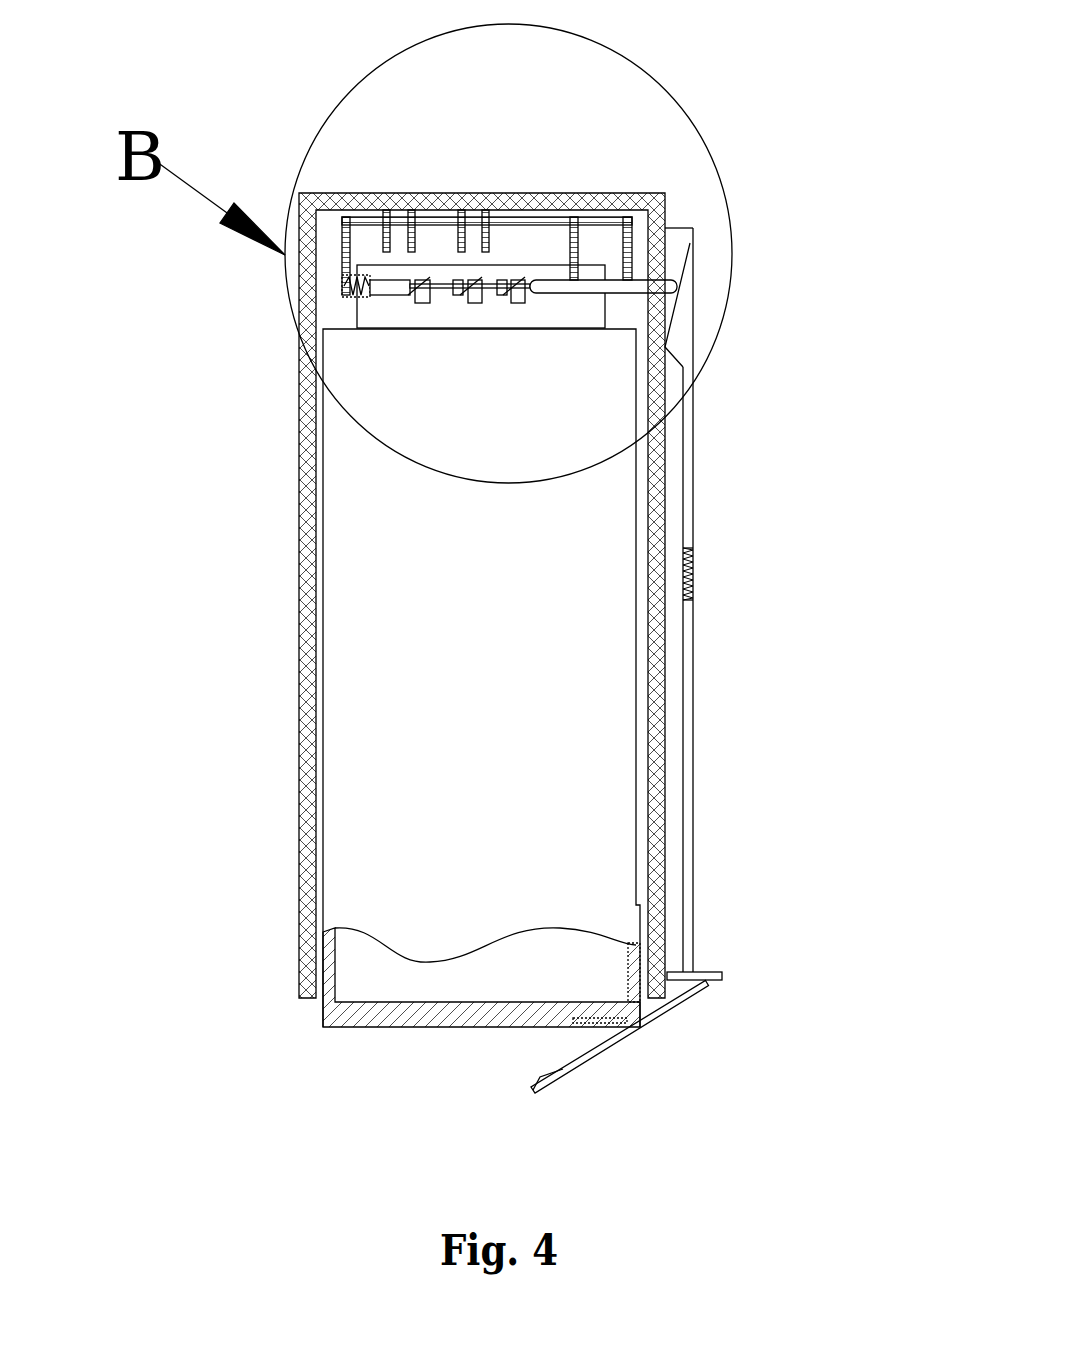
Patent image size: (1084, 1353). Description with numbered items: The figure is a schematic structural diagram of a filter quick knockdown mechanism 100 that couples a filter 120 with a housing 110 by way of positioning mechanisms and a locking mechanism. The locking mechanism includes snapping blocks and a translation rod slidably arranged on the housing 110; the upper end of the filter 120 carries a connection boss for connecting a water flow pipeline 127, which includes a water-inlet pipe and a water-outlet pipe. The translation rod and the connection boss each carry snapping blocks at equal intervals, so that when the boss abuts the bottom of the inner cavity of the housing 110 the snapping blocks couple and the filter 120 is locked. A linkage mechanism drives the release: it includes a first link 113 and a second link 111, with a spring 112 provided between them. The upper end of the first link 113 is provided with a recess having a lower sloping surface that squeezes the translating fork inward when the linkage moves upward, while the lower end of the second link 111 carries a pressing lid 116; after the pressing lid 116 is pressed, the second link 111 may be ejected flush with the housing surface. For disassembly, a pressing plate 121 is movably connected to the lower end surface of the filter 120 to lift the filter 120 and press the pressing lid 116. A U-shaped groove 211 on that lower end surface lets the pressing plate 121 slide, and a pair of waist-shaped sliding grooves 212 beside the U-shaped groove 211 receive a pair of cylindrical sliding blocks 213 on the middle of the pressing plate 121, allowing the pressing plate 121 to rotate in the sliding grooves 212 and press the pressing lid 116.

The filter quick knockdown mechanism 100 is at (800, 200).
The housing 110 is at (300, 583).
The second link 111 is at (690, 773).
The spring 112 is at (690, 587).
The first link 113 is at (690, 397).
The pressing lid 116 is at (700, 973).
The filter 120 is at (385, 862).
The pressing plate 121 is at (537, 1090).
The water flow pipeline 127 is at (397, 222).
The U-shaped groove 211 is at (507, 1023).
The sliding groove 212 is at (592, 1025).
The sliding block 213 is at (640, 1023).